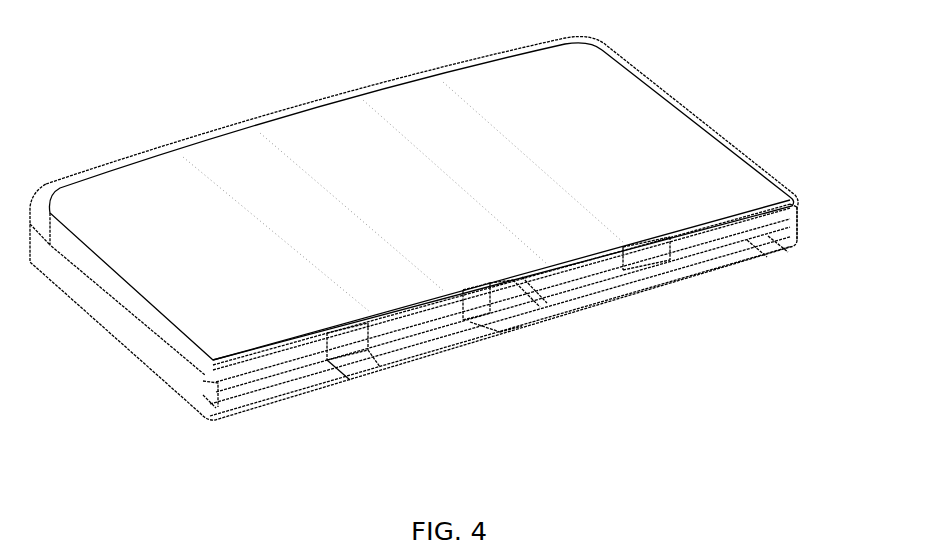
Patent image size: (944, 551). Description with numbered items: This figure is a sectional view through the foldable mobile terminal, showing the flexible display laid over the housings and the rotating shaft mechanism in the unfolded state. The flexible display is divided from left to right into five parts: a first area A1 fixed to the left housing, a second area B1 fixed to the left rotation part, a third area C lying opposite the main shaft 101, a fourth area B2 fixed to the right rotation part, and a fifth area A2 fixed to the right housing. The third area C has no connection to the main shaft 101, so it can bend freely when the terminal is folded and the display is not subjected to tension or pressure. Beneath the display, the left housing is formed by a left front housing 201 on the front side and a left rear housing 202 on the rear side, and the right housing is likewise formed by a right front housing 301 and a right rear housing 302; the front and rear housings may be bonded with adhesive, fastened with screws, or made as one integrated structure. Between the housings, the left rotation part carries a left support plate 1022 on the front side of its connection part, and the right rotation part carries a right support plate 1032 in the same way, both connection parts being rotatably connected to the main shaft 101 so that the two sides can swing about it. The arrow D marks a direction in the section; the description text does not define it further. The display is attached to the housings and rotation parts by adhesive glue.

The first area A1 is at (172, 212).
The second area B1 is at (258, 157).
The third area C is at (330, 133).
The fourth area B2 is at (402, 103).
The fifth area A2 is at (490, 70).
The left front housing 201 is at (237, 365).
The left rear housing 202 is at (278, 392).
The left support plate 1022 is at (417, 310).
The main shaft 101 is at (505, 302).
The direction D is at (528, 357).
The right support plate 1032 is at (600, 257).
The right rear housing 302 is at (668, 278).
The right front housing 301 is at (753, 220).